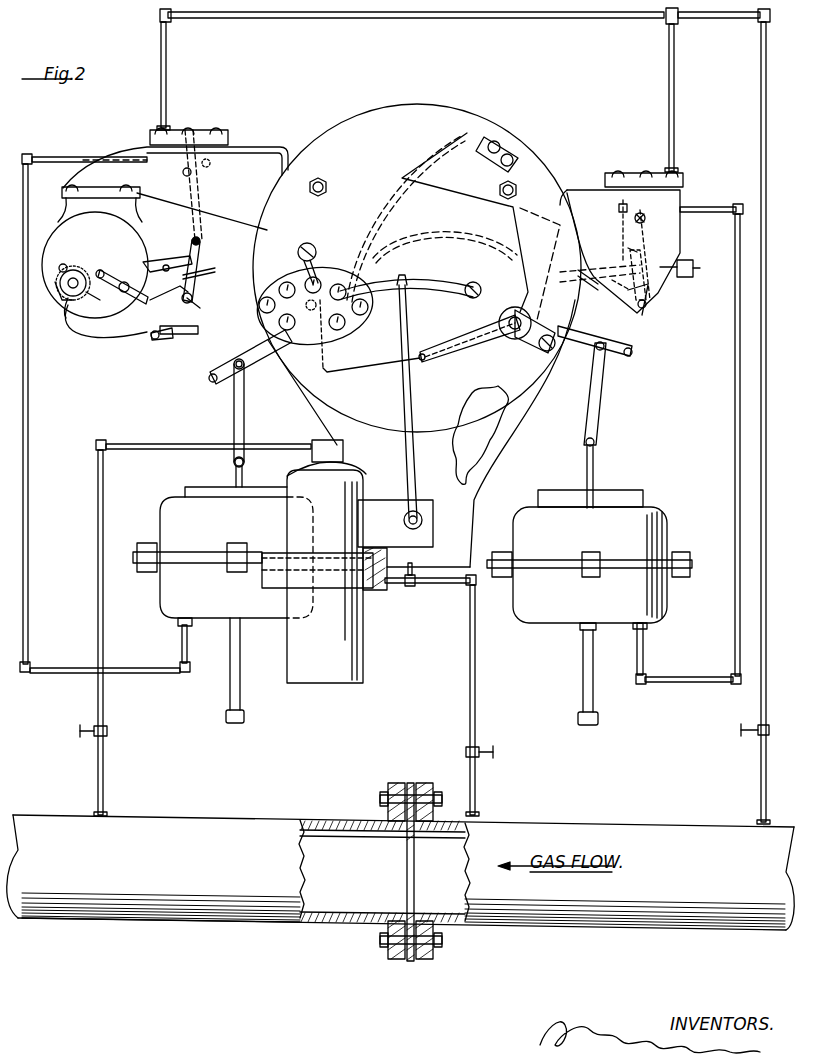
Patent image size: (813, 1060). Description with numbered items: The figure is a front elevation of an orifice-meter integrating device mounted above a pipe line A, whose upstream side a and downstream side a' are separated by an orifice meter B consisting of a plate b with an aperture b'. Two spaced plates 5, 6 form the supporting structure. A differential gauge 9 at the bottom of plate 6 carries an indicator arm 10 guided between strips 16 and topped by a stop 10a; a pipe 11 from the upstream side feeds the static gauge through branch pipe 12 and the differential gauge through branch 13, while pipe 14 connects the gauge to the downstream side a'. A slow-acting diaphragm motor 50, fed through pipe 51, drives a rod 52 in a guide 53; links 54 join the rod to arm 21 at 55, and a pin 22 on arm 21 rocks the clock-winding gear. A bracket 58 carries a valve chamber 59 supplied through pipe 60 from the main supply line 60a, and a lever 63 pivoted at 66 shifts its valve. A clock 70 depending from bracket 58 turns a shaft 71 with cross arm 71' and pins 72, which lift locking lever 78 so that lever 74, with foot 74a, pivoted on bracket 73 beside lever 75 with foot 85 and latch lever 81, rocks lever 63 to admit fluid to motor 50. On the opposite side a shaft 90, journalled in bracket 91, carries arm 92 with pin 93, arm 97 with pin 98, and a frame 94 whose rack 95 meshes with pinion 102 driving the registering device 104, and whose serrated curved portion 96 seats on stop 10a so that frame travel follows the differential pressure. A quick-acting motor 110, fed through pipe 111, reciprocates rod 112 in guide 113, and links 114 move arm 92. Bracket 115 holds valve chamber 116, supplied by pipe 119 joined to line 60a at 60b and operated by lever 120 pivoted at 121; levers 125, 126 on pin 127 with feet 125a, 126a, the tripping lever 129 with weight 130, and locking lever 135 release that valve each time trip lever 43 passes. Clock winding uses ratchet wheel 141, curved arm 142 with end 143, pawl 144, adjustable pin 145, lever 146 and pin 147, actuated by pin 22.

The plate 5 is at (488, 442).
The plate 6 is at (530, 378).
The differential gauge 9 is at (368, 610).
The indicator arm 10 is at (412, 452).
The stop 10a is at (396, 272).
The pipe 11 is at (476, 782).
The branch pipe 12 is at (425, 572).
The branch 13 is at (404, 586).
The pipe 14 is at (140, 452).
The strips 16 is at (426, 292).
The arm 21 is at (218, 368).
The pin 22 is at (209, 380).
The trip lever 43 is at (520, 262).
The diaphragm motor 50 is at (253, 556).
The pipe 51 is at (97, 158).
The rod 52 is at (242, 486).
The guide 53 is at (242, 656).
The links 54 is at (244, 408).
The pivot connection 55 is at (239, 360).
The bracket 58 is at (250, 148).
The valve chamber 59 is at (208, 130).
The pipe 60 is at (166, 82).
The supply pipe 60a is at (762, 156).
The connection 60b is at (668, 22).
The lever 63 is at (200, 205).
The pivot 66 is at (192, 173).
The clock 70 is at (95, 251).
The shaft 71 is at (122, 275).
The cross arm 71' is at (139, 278).
The pins 72 is at (73, 276).
The bracket 73 is at (168, 300).
The lever 74 is at (190, 240).
The foot or cam 74a is at (200, 296).
The lever 75 is at (202, 242).
The locking lever 78 is at (178, 262).
The latch lever 81 is at (216, 268).
The angular foot 85 is at (193, 302).
The shaft 90 is at (499, 316).
The bracket 91 is at (540, 352).
The arm 92 is at (578, 342).
The pin 93 is at (630, 358).
The frame 94 is at (406, 218).
The segmental rack 95 is at (330, 255).
The serrated curved portion 96 is at (420, 248).
The arm 97 is at (450, 360).
The pin 98 is at (420, 362).
The pinion 102 is at (308, 312).
The registering device 104 is at (323, 372).
The diaphragm motor 110 is at (589, 560).
The pipe 111 is at (690, 212).
The rod 112 is at (594, 480).
The guide 113 is at (596, 712).
The links 114 is at (604, 420).
The bracket 115 is at (575, 188).
The valve chamber 116 is at (635, 176).
The fluid pressure supply pipe 119 is at (674, 138).
The lever 120 is at (648, 238).
The pivot 121 is at (634, 219).
The lever 125 is at (650, 256).
The angular foot 125a is at (632, 300).
The lever 126 is at (624, 258).
The angular foot 126a is at (640, 310).
The pin 127 is at (648, 316).
The tripping lever 129 is at (605, 282).
The weight 130 is at (686, 278).
The locking lever 135 is at (652, 300).
The ratchet wheel 141 is at (74, 317).
The curved arm 142 is at (105, 338).
The projecting end 143 is at (55, 284).
The pawl 144 is at (88, 294).
The adjustable pin 145 is at (62, 264).
The lever 146 is at (179, 341).
The pin 147 is at (153, 340).
The pipe line A is at (655, 927).
The upstream side a is at (440, 898).
The downstream side a' is at (161, 947).
The orifice meter B is at (407, 958).
The plate b is at (389, 855).
The orifice b' is at (433, 862).